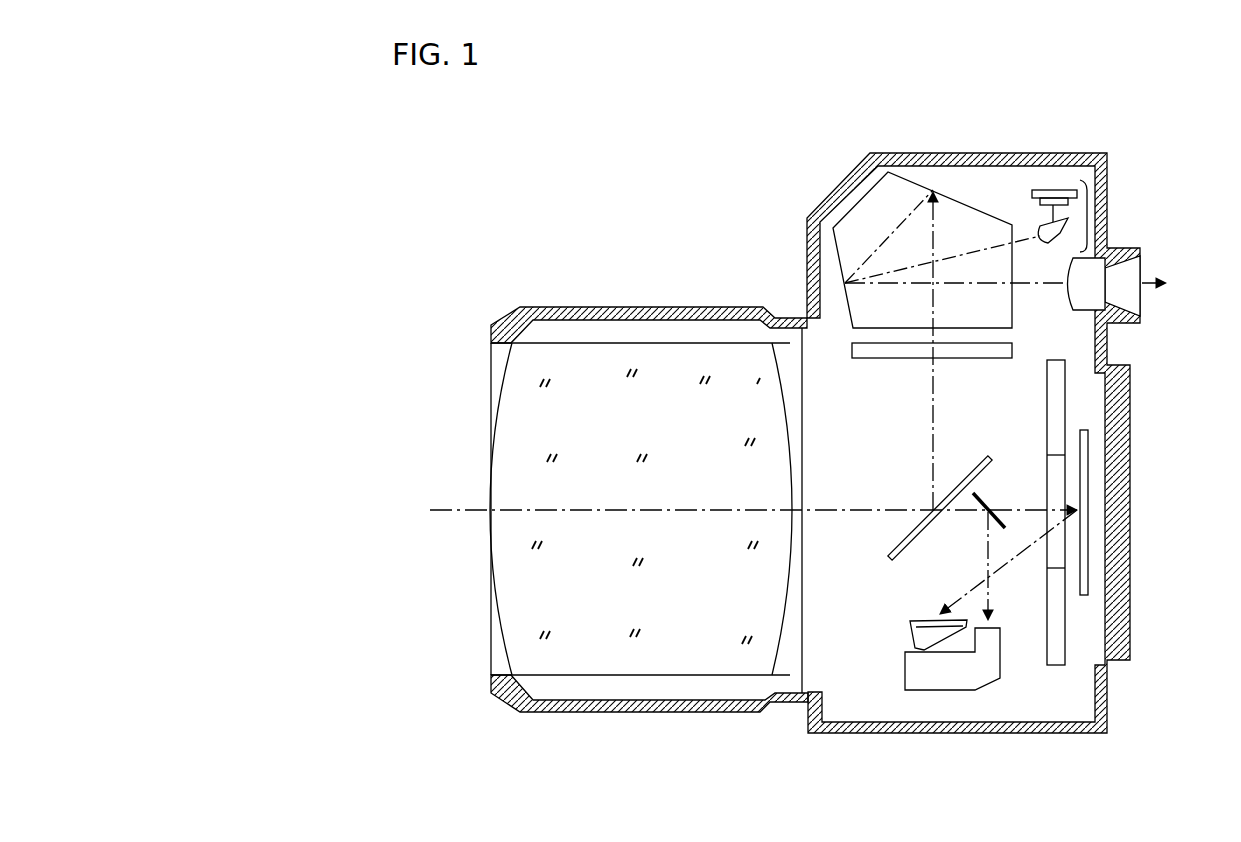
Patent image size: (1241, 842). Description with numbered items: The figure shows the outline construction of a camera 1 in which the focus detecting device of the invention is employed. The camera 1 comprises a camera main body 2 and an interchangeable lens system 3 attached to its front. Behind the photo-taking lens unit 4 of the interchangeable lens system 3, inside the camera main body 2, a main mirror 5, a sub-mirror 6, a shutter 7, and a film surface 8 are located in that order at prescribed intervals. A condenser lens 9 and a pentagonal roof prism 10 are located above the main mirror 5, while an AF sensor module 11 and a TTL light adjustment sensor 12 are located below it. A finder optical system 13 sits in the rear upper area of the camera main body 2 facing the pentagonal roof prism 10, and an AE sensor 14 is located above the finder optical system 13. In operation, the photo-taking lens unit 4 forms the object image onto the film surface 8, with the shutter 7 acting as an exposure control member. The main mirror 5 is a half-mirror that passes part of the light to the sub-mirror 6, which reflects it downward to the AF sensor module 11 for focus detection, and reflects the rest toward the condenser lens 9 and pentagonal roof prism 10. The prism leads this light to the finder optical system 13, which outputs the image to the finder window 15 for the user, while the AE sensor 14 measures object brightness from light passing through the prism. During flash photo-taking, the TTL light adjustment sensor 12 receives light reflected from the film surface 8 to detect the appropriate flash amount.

The camera 1 is at (788, 172).
The camera main body 2 is at (1130, 556).
The interchangeable lens system 3 is at (640, 712).
The photo-taking lens unit 4 is at (517, 423).
The main mirror 5 is at (975, 467).
The sub-mirror 6 is at (990, 506).
The shutter 7 is at (1067, 405).
The film surface 8 is at (1090, 470).
The condenser lens 9 is at (872, 358).
The pentagonal roof prism 10 is at (923, 185).
The AF sensor module 11 is at (942, 682).
The TTL light adjustment sensor 12 is at (904, 632).
The finder optical system 13 is at (1093, 272).
The AE sensor 14 is at (1088, 215).
The finder window 15 is at (1133, 297).